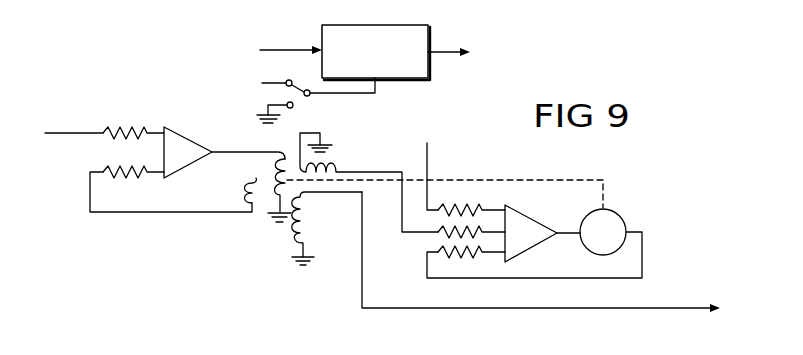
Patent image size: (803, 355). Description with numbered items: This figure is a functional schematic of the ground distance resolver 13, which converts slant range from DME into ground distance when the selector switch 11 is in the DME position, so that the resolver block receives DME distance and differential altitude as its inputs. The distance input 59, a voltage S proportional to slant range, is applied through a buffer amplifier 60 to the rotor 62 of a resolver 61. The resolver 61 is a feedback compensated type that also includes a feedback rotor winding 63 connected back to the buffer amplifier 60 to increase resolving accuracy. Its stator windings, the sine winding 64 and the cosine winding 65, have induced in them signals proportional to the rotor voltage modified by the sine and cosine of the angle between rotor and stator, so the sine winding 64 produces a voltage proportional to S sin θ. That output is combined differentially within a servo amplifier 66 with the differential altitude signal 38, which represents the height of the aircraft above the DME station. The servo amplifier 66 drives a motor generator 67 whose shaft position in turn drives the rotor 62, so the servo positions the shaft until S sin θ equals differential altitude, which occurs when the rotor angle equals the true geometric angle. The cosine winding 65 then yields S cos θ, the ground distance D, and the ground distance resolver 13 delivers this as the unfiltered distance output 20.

The distance input 59 is at (278, 52).
The ground distance resolver 13 is at (398, 79).
The unfiltered distance output 20 is at (447, 53).
The differential altitude signal 38 is at (273, 79).
The selector switch 11 is at (293, 107).
The buffer amplifier 60 is at (196, 143).
The resolver 61 is at (288, 249).
The rotor 62 is at (273, 174).
The feedback rotor winding 63 is at (248, 194).
The sine winding 64 is at (335, 162).
The cosine winding 65 is at (308, 218).
The servo amplifier 66 is at (527, 250).
The motor generator 67 is at (619, 215).